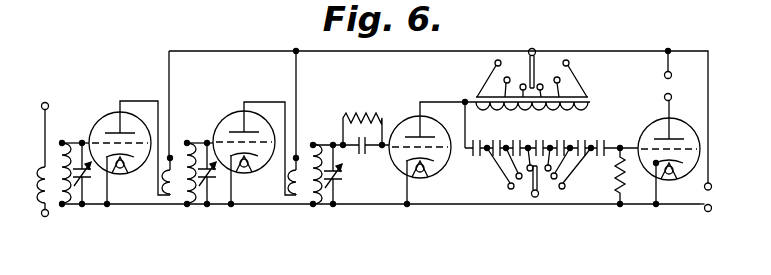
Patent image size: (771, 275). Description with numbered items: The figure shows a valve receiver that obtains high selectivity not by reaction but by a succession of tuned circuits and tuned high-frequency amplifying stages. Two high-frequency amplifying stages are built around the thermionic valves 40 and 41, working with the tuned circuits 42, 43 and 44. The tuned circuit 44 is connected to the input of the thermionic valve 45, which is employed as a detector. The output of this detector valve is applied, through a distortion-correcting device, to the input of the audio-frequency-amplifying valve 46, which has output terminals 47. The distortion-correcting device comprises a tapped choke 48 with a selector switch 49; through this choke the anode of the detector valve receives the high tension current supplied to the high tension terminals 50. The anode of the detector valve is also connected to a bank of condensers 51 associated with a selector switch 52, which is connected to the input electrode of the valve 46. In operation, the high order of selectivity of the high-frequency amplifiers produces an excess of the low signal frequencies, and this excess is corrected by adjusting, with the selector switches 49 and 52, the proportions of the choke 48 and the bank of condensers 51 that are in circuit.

The thermionic valve 40 is at (135, 160).
The thermionic valve 41 is at (260, 160).
The tuned circuit 42 is at (68, 195).
The tuned circuit 43 is at (197, 195).
The tuned circuit 44 is at (324, 195).
The thermionic valve 45 is at (436, 165).
The audio-frequency-amplifying valve 46 is at (647, 170).
The output terminals 47 is at (665, 83).
The tapped choke 48 is at (590, 101).
The selector switch 49 is at (537, 67).
The high tension terminals 50 is at (700, 192).
The bank of condensers 51 is at (586, 141).
The selector switch 52 is at (534, 185).